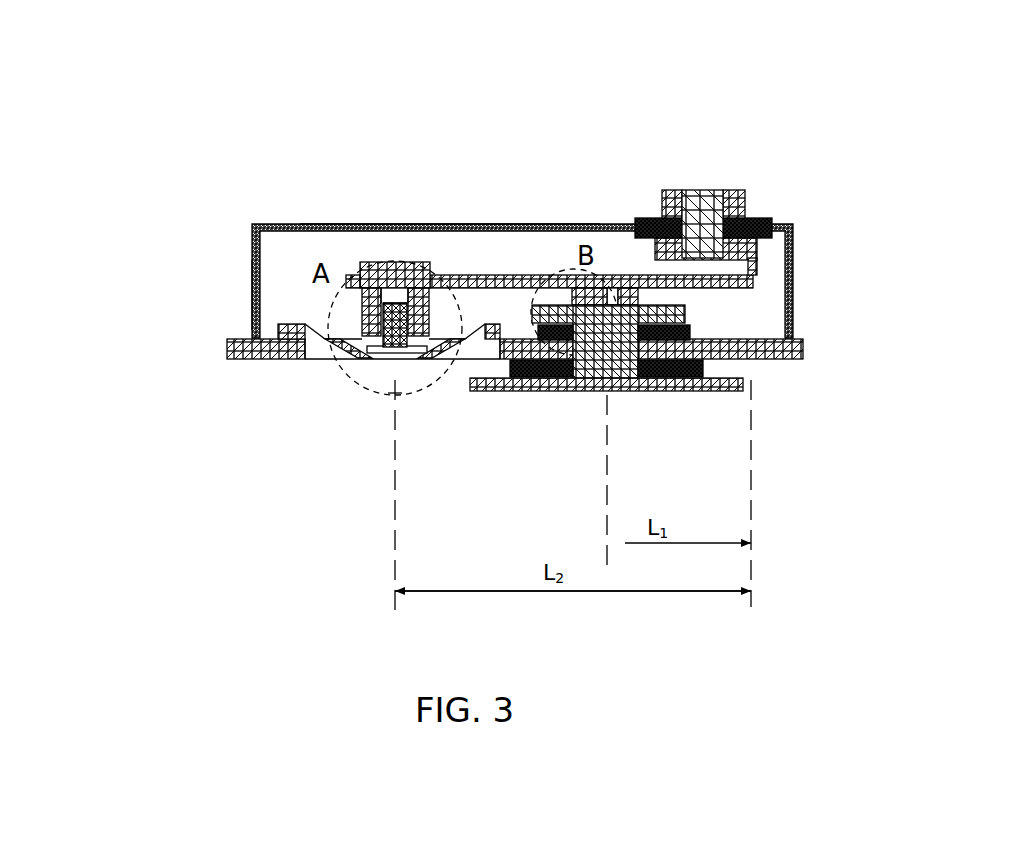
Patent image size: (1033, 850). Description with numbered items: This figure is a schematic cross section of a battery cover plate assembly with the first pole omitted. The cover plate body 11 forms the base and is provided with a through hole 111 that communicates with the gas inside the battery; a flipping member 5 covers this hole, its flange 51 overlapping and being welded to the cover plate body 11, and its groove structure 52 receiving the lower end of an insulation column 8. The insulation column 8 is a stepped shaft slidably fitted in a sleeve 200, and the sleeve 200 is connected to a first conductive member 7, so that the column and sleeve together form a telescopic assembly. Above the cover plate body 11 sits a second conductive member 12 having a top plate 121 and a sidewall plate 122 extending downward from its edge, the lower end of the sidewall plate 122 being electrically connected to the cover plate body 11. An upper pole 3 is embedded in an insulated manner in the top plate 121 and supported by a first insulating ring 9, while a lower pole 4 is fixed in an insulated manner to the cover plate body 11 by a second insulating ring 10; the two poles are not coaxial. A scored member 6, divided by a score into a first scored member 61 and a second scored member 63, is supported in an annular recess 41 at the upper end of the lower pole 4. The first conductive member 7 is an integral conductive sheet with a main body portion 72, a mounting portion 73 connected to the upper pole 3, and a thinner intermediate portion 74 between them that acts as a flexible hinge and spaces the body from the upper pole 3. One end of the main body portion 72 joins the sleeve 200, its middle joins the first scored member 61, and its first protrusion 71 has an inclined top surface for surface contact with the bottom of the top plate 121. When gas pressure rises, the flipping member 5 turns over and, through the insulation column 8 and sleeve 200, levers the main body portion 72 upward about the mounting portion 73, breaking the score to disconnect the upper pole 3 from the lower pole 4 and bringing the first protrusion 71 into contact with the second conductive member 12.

The upper pole 3 is at (698, 193).
The lower pole 4 is at (627, 373).
The flipping member 5 is at (367, 363).
The scored member 6 is at (645, 292).
The first conductive member 7 is at (458, 268).
The insulation column 8 is at (415, 347).
The first insulating ring 9 is at (647, 213).
The second insulating ring 10 is at (673, 372).
The cover plate body 11 is at (230, 337).
The second conductive member 12 is at (245, 207).
The annular recess 41 is at (652, 298).
The flange 51 is at (267, 360).
The groove structure 52 is at (380, 352).
The first scored member 61 is at (565, 303).
The second scored member 63 is at (540, 303).
The first protrusion 71 is at (407, 263).
The main body portion 72 is at (740, 292).
The mounting portion 73 is at (757, 237).
The intermediate portion 74 is at (757, 263).
The through hole 111 is at (318, 372).
The top plate 121 is at (298, 220).
The sidewall plate 122 is at (250, 278).
The sleeve 200 is at (435, 318).